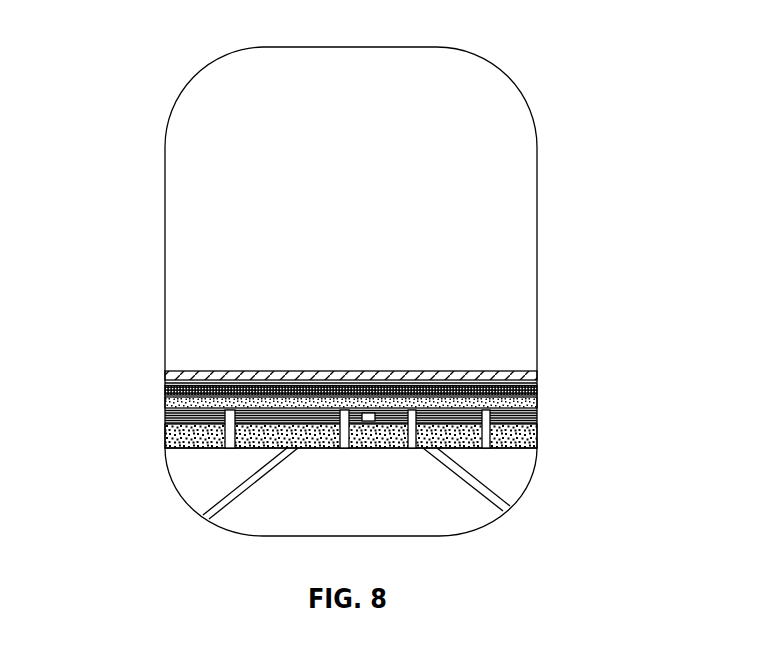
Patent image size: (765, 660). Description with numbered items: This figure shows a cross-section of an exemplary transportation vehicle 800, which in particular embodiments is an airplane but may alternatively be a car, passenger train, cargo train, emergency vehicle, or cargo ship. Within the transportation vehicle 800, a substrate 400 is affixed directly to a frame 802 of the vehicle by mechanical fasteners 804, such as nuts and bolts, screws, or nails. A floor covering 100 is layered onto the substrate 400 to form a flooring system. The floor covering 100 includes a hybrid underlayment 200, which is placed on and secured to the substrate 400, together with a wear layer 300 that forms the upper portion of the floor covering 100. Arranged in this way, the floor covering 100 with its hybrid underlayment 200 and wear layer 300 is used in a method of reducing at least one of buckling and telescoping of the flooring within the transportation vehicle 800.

The transportation vehicle 800 is at (529, 47).
The floor covering 100 is at (348, 380).
The hybrid underlayment 200 is at (155, 412).
The wear layer 300 is at (166, 374).
The substrate 400 is at (538, 418).
The frame 802 is at (530, 433).
The mechanical fasteners 804 is at (486, 436).